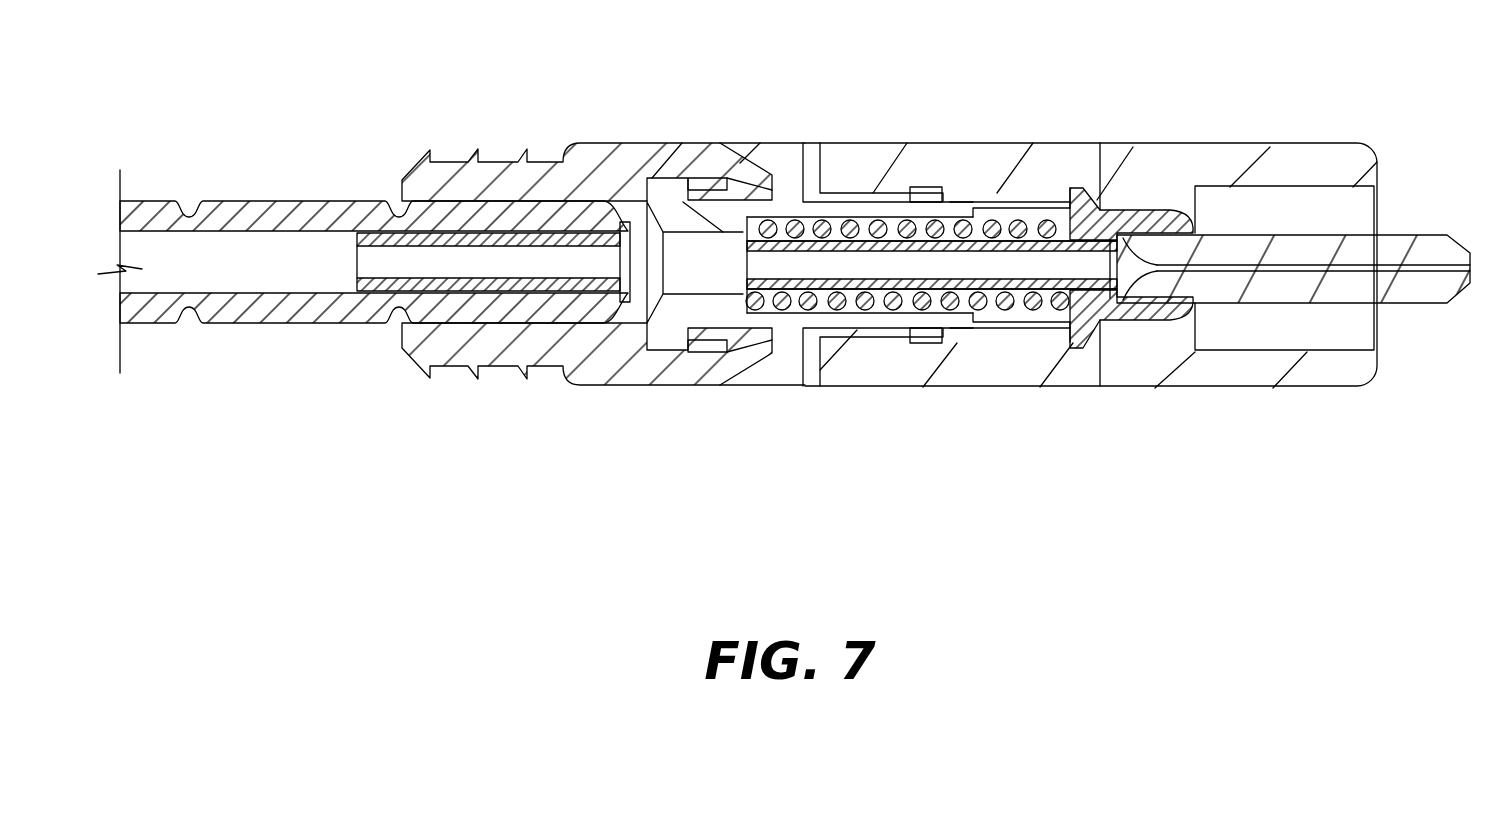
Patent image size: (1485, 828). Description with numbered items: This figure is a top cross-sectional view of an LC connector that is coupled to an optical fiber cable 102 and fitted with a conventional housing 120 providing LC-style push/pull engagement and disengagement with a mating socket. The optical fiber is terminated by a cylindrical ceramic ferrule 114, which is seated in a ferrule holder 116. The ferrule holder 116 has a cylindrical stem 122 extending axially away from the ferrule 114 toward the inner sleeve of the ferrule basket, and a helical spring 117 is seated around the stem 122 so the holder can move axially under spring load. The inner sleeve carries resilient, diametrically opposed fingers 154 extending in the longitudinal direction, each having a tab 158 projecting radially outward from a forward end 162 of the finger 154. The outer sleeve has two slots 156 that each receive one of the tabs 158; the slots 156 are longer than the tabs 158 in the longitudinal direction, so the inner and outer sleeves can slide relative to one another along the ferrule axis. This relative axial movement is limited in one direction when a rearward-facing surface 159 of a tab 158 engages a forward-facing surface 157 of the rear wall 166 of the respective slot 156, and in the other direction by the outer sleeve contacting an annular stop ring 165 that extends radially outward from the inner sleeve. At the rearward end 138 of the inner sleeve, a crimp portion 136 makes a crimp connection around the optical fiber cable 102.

The optical fiber cable 102 is at (279, 312).
The cylindrical ceramic ferrule 114 is at (1413, 288).
The ferrule holder 116 is at (1120, 218).
The helical spring 117 is at (765, 330).
The housing 120 is at (865, 160).
The cylindrical stem 122 is at (818, 265).
The crimp portion 136 is at (590, 337).
The rearward end 138 is at (408, 127).
The fingers 154 is at (880, 210).
The slots 156 is at (1045, 203).
The forward-facing surface 157 is at (957, 203).
The tab 158 is at (975, 205).
The rearward-facing surface 159 is at (942, 333).
The forward end 162 is at (1008, 200).
The annular stop ring 165 is at (802, 192).
The rear wall 166 is at (925, 187).